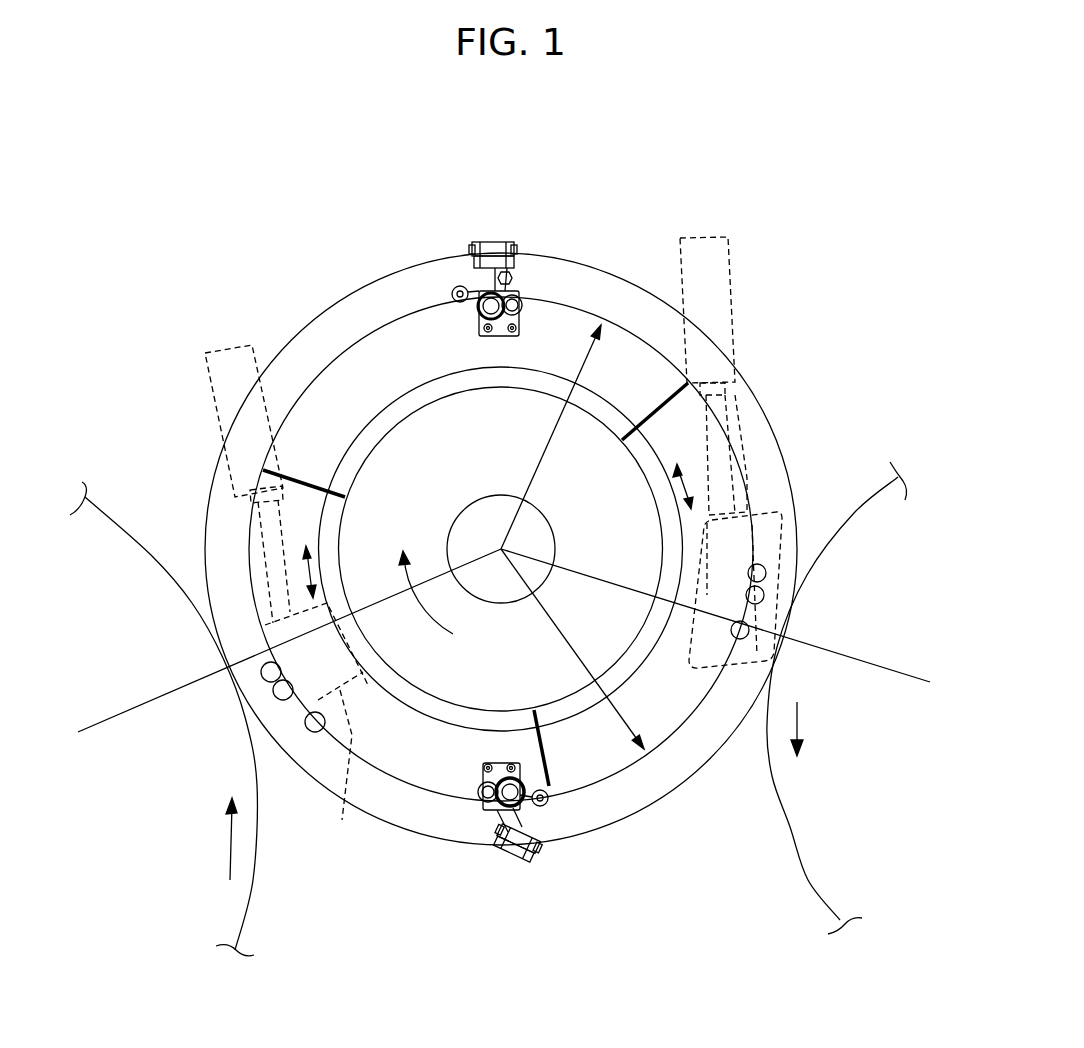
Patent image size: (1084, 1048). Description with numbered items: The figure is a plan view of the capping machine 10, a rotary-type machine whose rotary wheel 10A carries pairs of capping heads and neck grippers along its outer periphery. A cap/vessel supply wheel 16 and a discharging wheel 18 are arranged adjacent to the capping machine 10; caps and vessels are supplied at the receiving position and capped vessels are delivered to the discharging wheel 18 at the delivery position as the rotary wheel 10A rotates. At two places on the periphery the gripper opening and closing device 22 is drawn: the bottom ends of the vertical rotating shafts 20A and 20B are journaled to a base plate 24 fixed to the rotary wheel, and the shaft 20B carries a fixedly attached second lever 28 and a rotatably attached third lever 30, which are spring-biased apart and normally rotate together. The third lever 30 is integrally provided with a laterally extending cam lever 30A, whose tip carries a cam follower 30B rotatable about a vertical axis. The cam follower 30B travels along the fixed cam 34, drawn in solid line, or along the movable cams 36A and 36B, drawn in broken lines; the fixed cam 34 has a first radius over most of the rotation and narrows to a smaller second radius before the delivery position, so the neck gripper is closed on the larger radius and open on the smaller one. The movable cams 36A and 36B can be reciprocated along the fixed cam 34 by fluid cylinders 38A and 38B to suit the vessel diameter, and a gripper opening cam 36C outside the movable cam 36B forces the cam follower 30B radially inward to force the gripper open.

The capping machine 10 is at (455, 882).
The rotary wheel 10A is at (365, 292).
The cap/vessel supply wheel 16 is at (250, 916).
The discharging wheel 18 is at (814, 877).
The rotating shaft 20A is at (515, 308).
The rotating shaft 20B is at (480, 320).
The gripper opening and closing device 22 is at (513, 554).
The base plate 24 is at (498, 336).
The second lever 28 is at (508, 285).
The third lever 30 is at (525, 555).
The cam lever 30A is at (481, 252).
The cam follower 30B is at (455, 290).
The fixed cam 34 is at (393, 777).
The movable cam 36A is at (319, 730).
The movable cam 36B is at (747, 478).
The gripper opening cam 36C is at (800, 525).
The fluid cylinder 38A is at (215, 398).
The fluid cylinder 38B is at (722, 309).